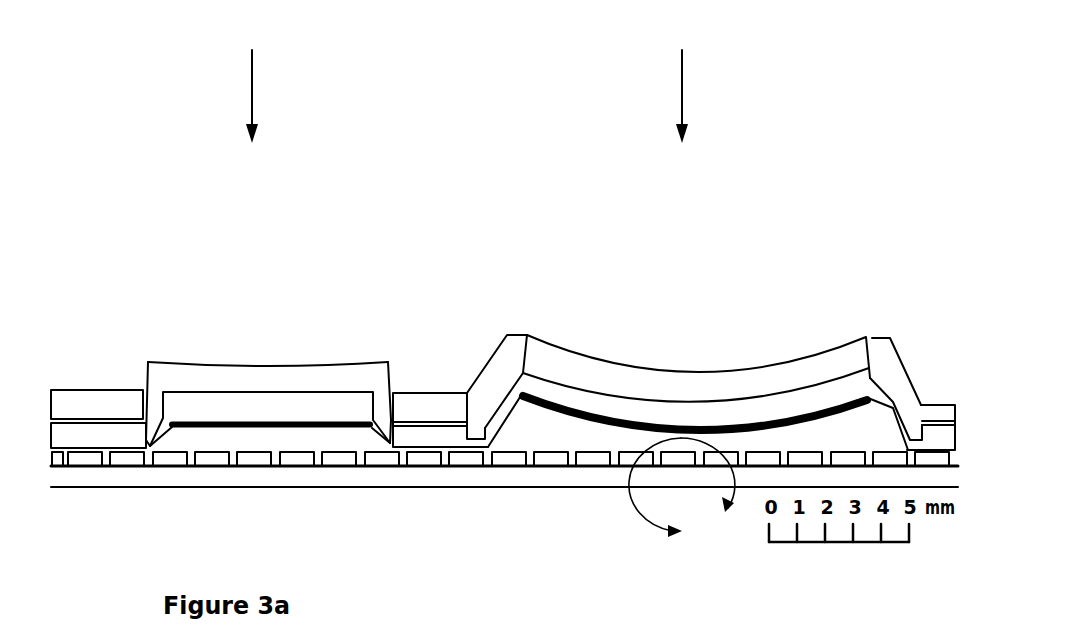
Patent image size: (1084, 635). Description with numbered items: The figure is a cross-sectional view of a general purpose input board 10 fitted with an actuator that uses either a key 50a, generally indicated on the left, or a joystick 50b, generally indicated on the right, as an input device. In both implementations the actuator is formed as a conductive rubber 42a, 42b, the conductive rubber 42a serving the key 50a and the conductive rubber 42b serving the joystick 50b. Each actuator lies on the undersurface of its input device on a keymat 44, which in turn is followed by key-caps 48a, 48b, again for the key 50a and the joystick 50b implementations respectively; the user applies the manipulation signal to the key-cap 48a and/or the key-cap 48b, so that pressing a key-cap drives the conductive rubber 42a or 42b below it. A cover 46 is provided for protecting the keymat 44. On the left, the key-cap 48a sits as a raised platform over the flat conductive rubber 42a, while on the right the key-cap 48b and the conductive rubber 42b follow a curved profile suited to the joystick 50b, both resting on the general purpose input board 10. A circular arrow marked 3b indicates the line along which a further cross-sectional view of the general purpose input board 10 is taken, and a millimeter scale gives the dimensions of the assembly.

The general purpose input board 10 is at (150, 487).
The conductive rubber 42a is at (285, 427).
The conductive rubber 42b is at (613, 425).
The keymat 44 is at (208, 403).
The cover 46 is at (422, 403).
The key-cap 48a is at (305, 368).
The key-cap 48b is at (595, 367).
The key 50a is at (231, 91).
The joystick 50b is at (704, 91).
The section line 3b is at (682, 489).